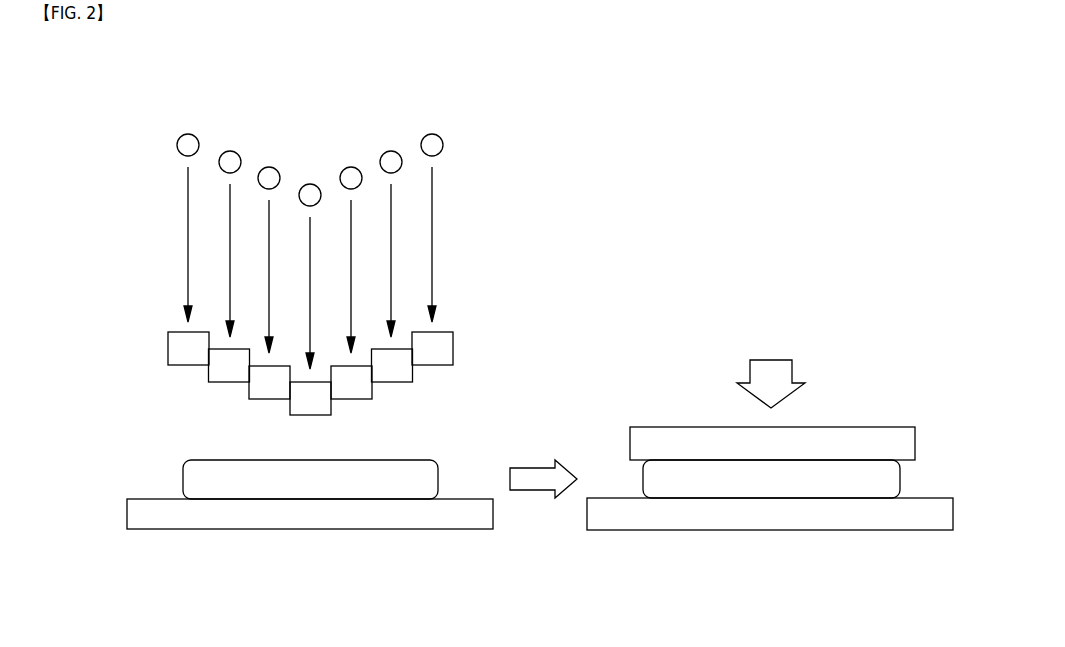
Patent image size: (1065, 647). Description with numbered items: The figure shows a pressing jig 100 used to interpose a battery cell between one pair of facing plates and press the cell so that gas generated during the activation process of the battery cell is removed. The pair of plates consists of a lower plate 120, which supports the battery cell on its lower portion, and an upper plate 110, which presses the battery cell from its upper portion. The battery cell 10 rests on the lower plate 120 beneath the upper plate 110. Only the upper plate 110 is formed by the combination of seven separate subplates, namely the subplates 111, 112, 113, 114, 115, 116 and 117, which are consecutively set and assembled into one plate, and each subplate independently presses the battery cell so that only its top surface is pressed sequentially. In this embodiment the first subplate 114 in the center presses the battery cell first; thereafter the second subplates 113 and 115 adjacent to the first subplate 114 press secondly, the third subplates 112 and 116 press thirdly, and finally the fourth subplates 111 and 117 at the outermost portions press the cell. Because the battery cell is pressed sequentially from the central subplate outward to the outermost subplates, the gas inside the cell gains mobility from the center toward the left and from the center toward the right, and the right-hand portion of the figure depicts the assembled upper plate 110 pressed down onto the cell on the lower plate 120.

The pressing jig 100 is at (159, 107).
The upper plate 110 is at (466, 331).
The fourth subplate 111 is at (192, 358).
The third subplate 112 is at (232, 375).
The second subplate 113 is at (273, 391).
The first subplate 114 is at (313, 407).
The second subplate 115 is at (349, 390).
The third subplate 116 is at (389, 374).
The fourth subplate 117 is at (430, 358).
The ink layer 10 is at (418, 477).
The lower plate 120 is at (442, 518).